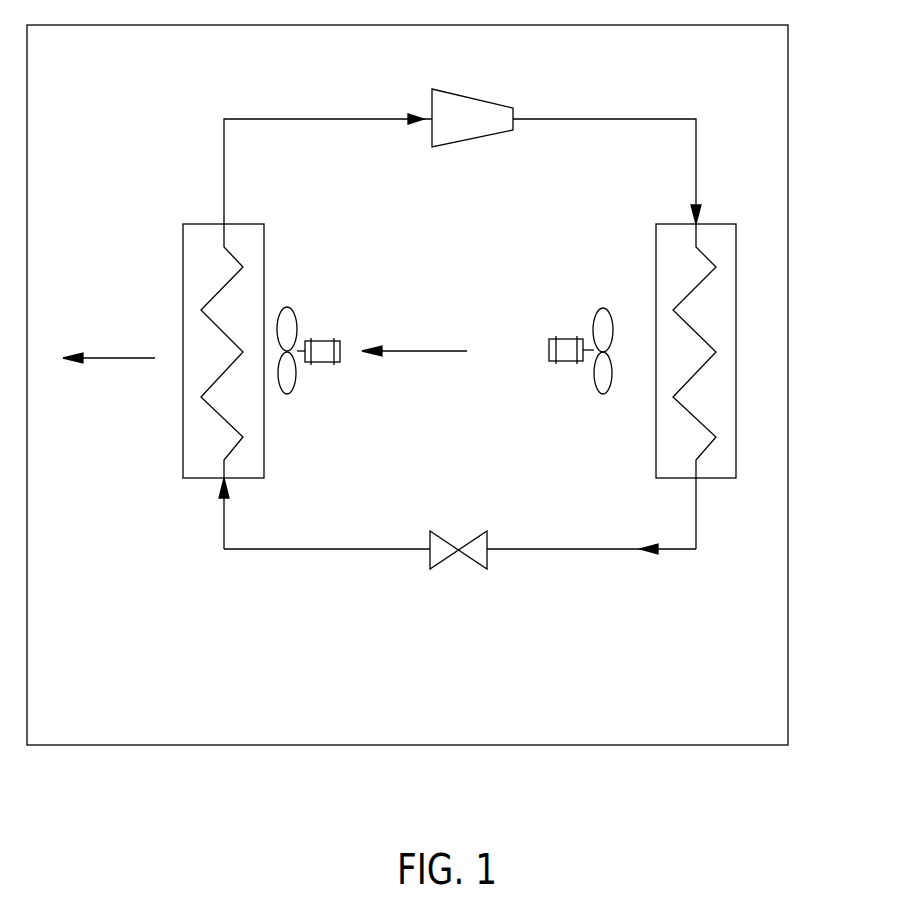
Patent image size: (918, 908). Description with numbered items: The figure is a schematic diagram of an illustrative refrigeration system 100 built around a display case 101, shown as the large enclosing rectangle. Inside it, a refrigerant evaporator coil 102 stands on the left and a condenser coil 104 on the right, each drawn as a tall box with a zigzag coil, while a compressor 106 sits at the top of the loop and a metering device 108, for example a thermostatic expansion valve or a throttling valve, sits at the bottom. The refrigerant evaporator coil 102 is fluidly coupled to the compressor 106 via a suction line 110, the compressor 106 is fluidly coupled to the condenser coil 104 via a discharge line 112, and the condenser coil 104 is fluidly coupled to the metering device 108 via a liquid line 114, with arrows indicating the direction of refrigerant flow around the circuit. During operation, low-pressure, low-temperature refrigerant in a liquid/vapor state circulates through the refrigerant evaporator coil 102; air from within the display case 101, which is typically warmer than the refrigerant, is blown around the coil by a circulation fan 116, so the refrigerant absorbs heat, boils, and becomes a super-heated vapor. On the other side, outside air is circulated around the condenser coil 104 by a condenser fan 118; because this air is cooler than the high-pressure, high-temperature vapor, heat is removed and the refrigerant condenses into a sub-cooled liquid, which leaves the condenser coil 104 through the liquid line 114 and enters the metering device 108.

The refrigeration system 100 is at (832, 152).
The display case 101 is at (790, 538).
The refrigerant evaporator coil 102 is at (264, 277).
The condenser coil 104 is at (736, 289).
The compressor 106 is at (488, 99).
The metering device 108 is at (487, 542).
The suction line 110 is at (224, 178).
The discharge line 112 is at (696, 163).
The liquid line 114 is at (698, 524).
The circulation fan 116 is at (322, 347).
The condenser fan 118 is at (568, 347).